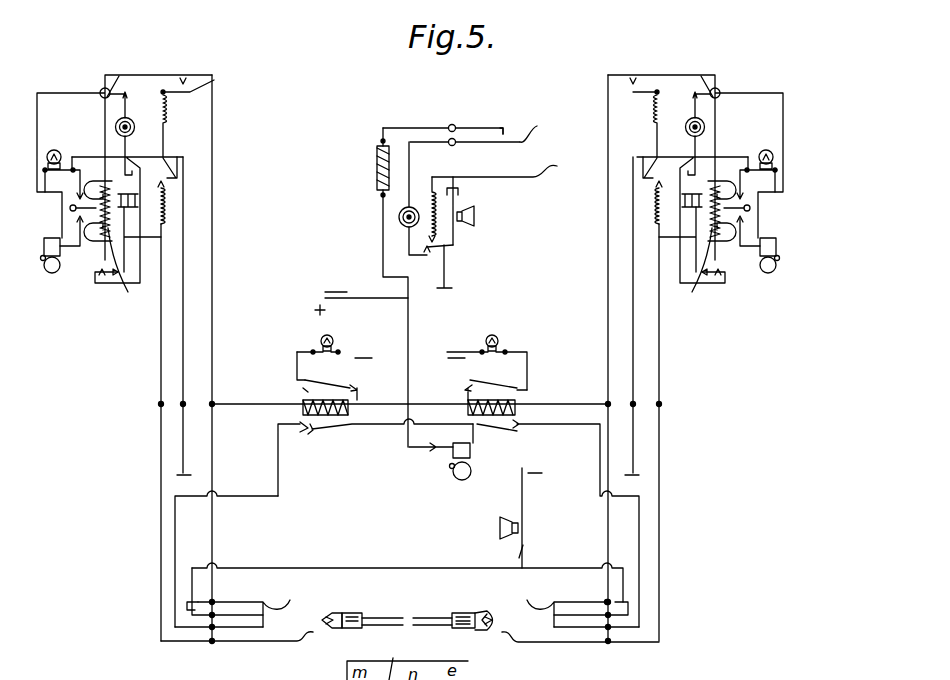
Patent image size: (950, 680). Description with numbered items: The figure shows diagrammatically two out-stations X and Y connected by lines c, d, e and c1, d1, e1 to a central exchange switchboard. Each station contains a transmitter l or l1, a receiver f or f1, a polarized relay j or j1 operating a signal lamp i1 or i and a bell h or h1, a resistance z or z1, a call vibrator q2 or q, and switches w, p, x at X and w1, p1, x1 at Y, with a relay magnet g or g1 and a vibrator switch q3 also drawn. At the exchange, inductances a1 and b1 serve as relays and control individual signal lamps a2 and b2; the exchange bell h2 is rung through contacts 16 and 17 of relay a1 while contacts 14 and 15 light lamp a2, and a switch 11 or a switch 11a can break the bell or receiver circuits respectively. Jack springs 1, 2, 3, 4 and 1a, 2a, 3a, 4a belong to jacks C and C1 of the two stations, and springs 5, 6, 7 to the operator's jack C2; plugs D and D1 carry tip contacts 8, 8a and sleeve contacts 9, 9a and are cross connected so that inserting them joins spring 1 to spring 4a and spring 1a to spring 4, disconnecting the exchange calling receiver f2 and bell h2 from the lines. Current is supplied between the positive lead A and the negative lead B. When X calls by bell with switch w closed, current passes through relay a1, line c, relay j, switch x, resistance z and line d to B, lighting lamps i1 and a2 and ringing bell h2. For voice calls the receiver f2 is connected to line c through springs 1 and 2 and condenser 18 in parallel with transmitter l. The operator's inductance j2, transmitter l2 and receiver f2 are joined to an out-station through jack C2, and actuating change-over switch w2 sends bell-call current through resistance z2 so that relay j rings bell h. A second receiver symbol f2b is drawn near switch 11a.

The station X is at (124, 160).
The station Y is at (695, 168).
The change-over switch p is at (120, 85).
The change-over switch p1 is at (700, 85).
The transmitter l is at (135, 126).
The transmitter l1 is at (688, 125).
The operator's transmitter l2 is at (398, 220).
The call vibrator q is at (642, 97).
The call vibrator q2 is at (168, 121).
The vibrator switch q3 is at (214, 80).
The switch w is at (168, 156).
The switch w1 is at (658, 165).
The change-over switch w2 is at (443, 247).
The resistance z is at (168, 205).
The resistance z1 is at (652, 205).
The resistance z2 is at (433, 192).
The line c is at (214, 266).
The line d is at (188, 297).
The line e is at (161, 342).
The line c1 is at (607, 283).
The line d1 is at (632, 308).
The line e1 is at (659, 340).
The signal lamp i is at (766, 148).
The signal lamp i1 is at (55, 149).
The relay magnet g is at (115, 172).
The relay magnet g1 is at (722, 211).
The polarized relay j is at (128, 292).
The polarized relay j1 is at (692, 292).
The operator's inductance j2 is at (377, 162).
The receiver f is at (158, 172).
The receiver f1 is at (675, 210).
The exchange calling receiver f2 is at (468, 215).
The contact f2b is at (509, 528).
The change-over switch x is at (100, 275).
The change-over switch x1 is at (716, 274).
The bell h is at (50, 237).
The bell h1 is at (770, 237).
The exchange bell h2 is at (472, 472).
The negative supply lead B is at (419, 406).
The positive supply lead A is at (361, 293).
The jack C is at (189, 660).
The jack C1 is at (632, 660).
The jack C2 is at (451, 123).
The two-way plug D is at (362, 607).
The two-way plug D1 is at (453, 607).
The inductance relay a1 is at (352, 402).
The inductance relay b1 is at (516, 402).
The individual signal lamp a2 is at (321, 343).
The individual signal lamp b2 is at (500, 340).
The jack spring 1 is at (244, 603).
The jack spring 2 is at (236, 614).
The jack spring 3 is at (225, 628).
The jack spring 4 is at (273, 641).
The jack spring 1a is at (567, 602).
The jack spring 2a is at (582, 615).
The jack spring 3a is at (582, 627).
The jack spring 4a is at (543, 642).
The jack spring 5 is at (491, 122).
The jack spring 6 is at (529, 132).
The jack spring 7 is at (494, 166).
The tip contact 8 is at (333, 628).
The sleeve contact 9 is at (355, 628).
The tip contact 8a is at (488, 630).
The sleeve contact 9a is at (458, 628).
The switch 11 is at (433, 450).
The switch 11a is at (528, 552).
The contact 14 is at (320, 355).
The contact 15 is at (303, 389).
The contact 16 is at (328, 432).
The contact 17 is at (302, 432).
The condenser 18 is at (187, 603).